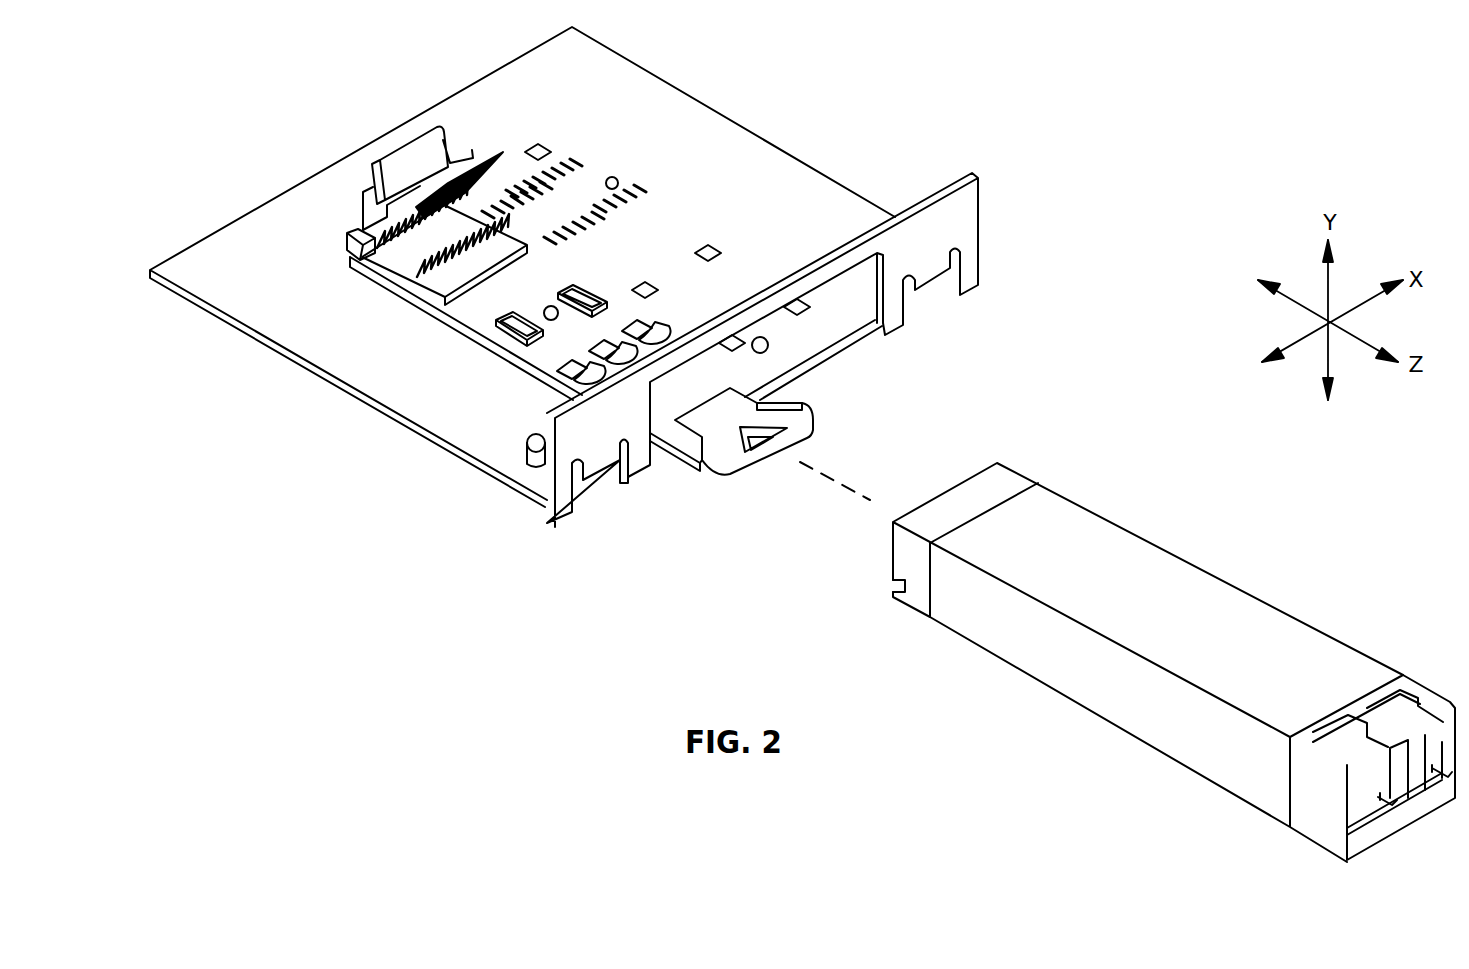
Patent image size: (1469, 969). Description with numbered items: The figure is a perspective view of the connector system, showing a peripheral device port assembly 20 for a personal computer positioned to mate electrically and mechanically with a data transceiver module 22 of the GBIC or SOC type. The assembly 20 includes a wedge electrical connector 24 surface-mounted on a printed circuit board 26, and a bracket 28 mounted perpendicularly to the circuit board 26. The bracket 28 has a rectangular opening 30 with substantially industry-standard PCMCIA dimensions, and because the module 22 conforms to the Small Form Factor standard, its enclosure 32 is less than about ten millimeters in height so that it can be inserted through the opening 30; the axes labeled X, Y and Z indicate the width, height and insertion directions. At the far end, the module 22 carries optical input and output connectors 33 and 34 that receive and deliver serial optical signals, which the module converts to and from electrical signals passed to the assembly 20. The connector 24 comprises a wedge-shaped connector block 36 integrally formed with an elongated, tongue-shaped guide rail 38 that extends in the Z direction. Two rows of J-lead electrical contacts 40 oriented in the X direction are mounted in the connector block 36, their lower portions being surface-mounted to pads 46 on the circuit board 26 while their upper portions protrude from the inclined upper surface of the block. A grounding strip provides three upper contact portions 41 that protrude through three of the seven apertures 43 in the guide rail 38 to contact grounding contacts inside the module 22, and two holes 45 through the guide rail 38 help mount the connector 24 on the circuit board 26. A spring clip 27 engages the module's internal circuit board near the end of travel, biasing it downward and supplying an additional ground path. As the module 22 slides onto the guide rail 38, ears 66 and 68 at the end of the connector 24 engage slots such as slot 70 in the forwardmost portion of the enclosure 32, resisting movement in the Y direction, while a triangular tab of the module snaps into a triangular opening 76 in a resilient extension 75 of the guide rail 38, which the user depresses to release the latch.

The peripheral device port assembly 20 is at (410, 455).
The data transceiver module 22 is at (1134, 677).
The wedge electrical connector 24 is at (453, 326).
The printed circuit board 26 is at (735, 135).
The spring clip 27 is at (418, 134).
The bracket 28 is at (975, 218).
The rectangular opening 30 is at (848, 337).
The enclosure 32 is at (1185, 570).
The optical input connector 33 is at (1368, 802).
The optical output connector 34 is at (1420, 780).
The wedge-shaped connector block 36 is at (390, 261).
The guide rail 38 is at (683, 468).
The electrical contacts 40 is at (395, 220).
The upper contact portions 41 is at (650, 330).
The apertures 43 is at (588, 290).
The holes 45 is at (545, 307).
The pads 46 is at (506, 187).
The ear 66 is at (347, 246).
The ear 68 is at (454, 178).
The slot 70 is at (893, 579).
The resilient extension 75 is at (815, 421).
The triangular opening 76 is at (775, 455).